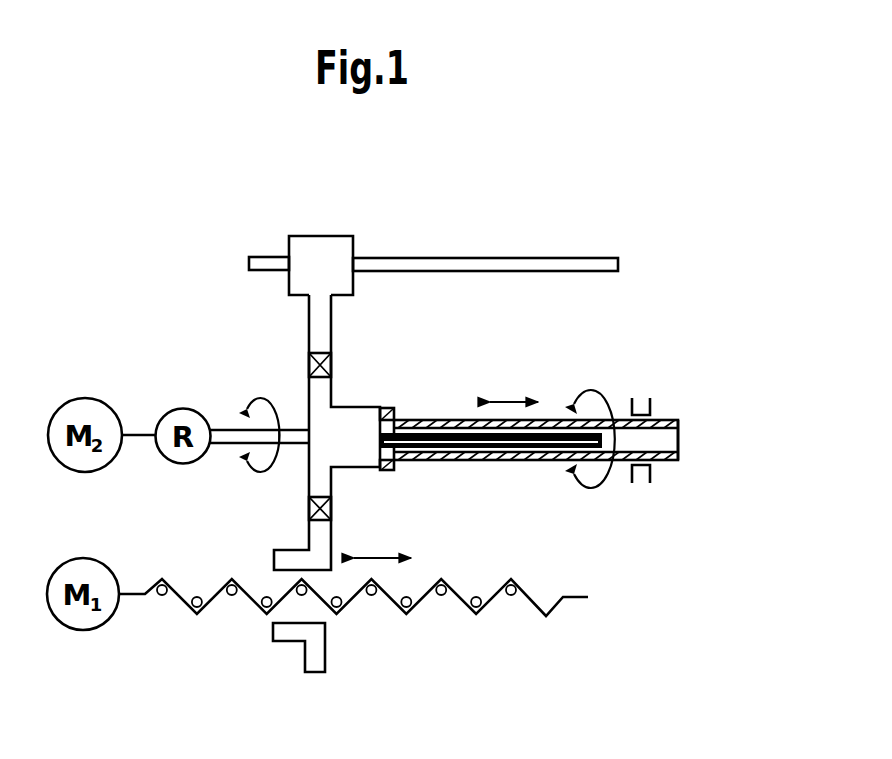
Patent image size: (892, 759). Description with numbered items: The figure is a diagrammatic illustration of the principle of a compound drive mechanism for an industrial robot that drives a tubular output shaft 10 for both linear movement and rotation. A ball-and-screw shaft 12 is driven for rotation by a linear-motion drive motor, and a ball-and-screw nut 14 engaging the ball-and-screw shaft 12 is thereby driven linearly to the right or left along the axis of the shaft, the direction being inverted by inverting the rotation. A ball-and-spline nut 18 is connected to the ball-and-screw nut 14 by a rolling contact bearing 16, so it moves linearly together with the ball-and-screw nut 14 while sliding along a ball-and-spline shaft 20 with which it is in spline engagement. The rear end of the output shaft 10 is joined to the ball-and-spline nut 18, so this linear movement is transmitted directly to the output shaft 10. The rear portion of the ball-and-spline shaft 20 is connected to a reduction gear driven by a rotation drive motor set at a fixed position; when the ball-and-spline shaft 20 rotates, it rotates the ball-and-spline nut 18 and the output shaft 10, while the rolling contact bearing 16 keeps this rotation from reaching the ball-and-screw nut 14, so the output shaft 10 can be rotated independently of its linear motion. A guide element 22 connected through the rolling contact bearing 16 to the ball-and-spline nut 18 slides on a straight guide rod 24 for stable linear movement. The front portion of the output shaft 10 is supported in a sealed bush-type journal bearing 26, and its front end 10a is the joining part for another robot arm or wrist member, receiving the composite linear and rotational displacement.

The output shaft 10 is at (658, 418).
The front end 10a is at (680, 438).
The ball-and-screw shaft 12 is at (527, 593).
The ball-and-screw nut 14 is at (320, 637).
The rolling contact bearing 16 is at (309, 512).
The ball-and-spline nut 18 is at (358, 457).
The ball-and-spline shaft 20 is at (434, 418).
The guide element 22 is at (324, 242).
The straight guide rod 24 is at (577, 260).
The sealed bush-type journal bearing 26 is at (631, 404).